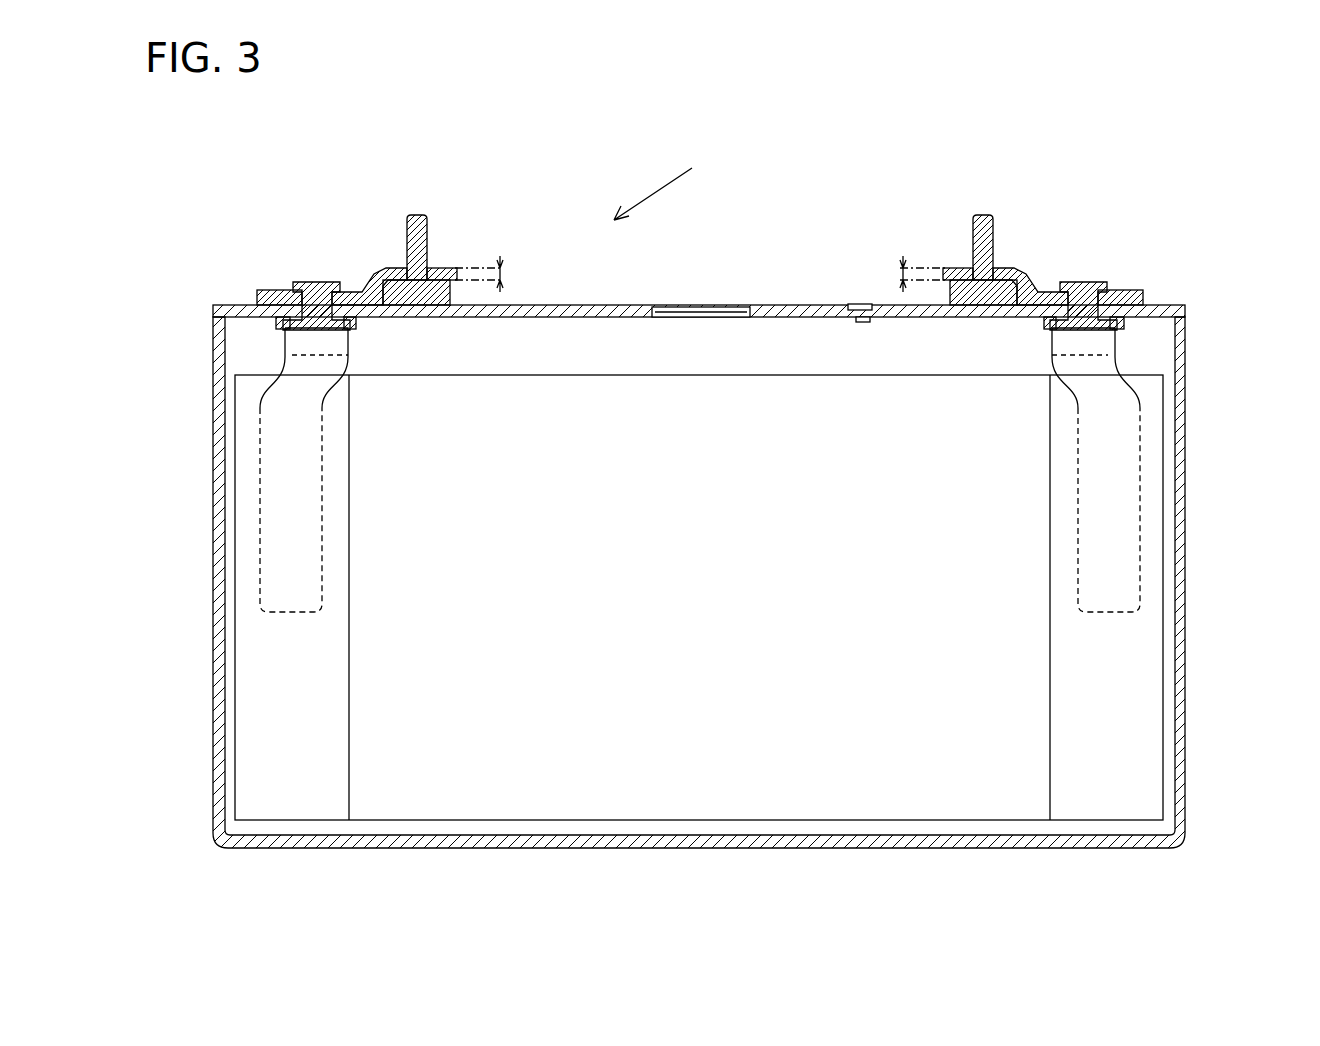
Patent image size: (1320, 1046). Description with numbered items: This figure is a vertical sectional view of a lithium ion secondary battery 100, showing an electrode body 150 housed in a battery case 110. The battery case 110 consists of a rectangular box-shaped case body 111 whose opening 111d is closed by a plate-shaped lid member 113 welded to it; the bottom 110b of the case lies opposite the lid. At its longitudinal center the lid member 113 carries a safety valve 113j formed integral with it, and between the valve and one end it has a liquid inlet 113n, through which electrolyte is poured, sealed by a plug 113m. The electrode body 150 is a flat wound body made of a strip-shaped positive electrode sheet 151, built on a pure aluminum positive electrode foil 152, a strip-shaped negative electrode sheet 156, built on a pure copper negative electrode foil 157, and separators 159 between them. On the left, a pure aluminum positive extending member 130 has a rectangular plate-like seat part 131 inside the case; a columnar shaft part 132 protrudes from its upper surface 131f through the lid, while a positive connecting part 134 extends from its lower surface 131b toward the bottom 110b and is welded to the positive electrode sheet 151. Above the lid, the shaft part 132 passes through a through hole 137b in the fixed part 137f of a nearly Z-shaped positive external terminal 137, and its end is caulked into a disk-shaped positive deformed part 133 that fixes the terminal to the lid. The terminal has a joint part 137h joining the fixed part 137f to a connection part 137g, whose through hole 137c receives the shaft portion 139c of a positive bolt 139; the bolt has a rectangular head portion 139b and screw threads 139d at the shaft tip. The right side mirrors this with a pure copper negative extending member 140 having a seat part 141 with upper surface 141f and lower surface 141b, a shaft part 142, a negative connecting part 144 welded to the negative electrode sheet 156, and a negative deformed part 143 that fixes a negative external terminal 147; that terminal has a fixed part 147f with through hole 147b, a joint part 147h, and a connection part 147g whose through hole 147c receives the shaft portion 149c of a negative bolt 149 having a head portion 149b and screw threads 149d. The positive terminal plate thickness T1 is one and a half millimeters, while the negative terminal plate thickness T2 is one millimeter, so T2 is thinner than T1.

The battery 100 is at (671, 180).
The battery case 110 is at (1255, 252).
The bottom of battery case 110b is at (612, 832).
The case body 111 is at (1179, 346).
The opening 111d is at (270, 312).
The lid member 113 is at (1186, 305).
The safety valve 113j is at (700, 305).
The plug 113m is at (860, 303).
The liquid inlet 113n is at (862, 323).
The positive extending member 130 is at (310, 392).
The seat part 131 is at (290, 362).
The lower surface of seat part 131b is at (300, 377).
The upper surface of seat part 131f is at (292, 348).
The shaft part 132 is at (280, 290).
The positive deformed part 133 is at (320, 282).
The positive connecting part 134 is at (262, 506).
The positive external terminal 137 is at (398, 166).
The through hole 137b is at (346, 314).
The through hole 137c is at (450, 274).
The fixed part 137f is at (262, 296).
The connection part 137g is at (392, 290).
The joint part 137h is at (372, 290).
The positive bolt 139 is at (418, 214).
The head portion 139b is at (421, 314).
The shaft portion 139c is at (446, 296).
The screw threads 139d is at (432, 272).
The negative extending member 140 is at (1090, 392).
The seat part 141 is at (1110, 362).
The lower surface of seat part 141b is at (1100, 377).
The upper surface of seat part 141f is at (1108, 348).
The shaft part 142 is at (1120, 290).
The negative deformed part 143 is at (1080, 282).
The negative connecting part 144 is at (1138, 506).
The negative external terminal 147 is at (1237, 166).
The through hole 147b is at (1054, 314).
The through hole 147c is at (950, 274).
The fixed part 147f is at (1138, 296).
The connection part 147g is at (1008, 290).
The joint part 147h is at (1028, 290).
The negative bolt 149 is at (982, 214).
The head portion 149b is at (979, 314).
The shaft portion 149c is at (954, 296).
The screw threads 149d is at (968, 272).
The electrode body 150 is at (515, 738).
The positive electrode sheet 151 is at (235, 770).
The positive electrode foil 152 is at (280, 716).
The negative electrode sheet 156 is at (1165, 770).
The negative electrode foil 157 is at (1120, 716).
The separator 159 is at (865, 772).
The plate thickness T1 is at (495, 274).
The plate thickness T2 is at (906, 274).